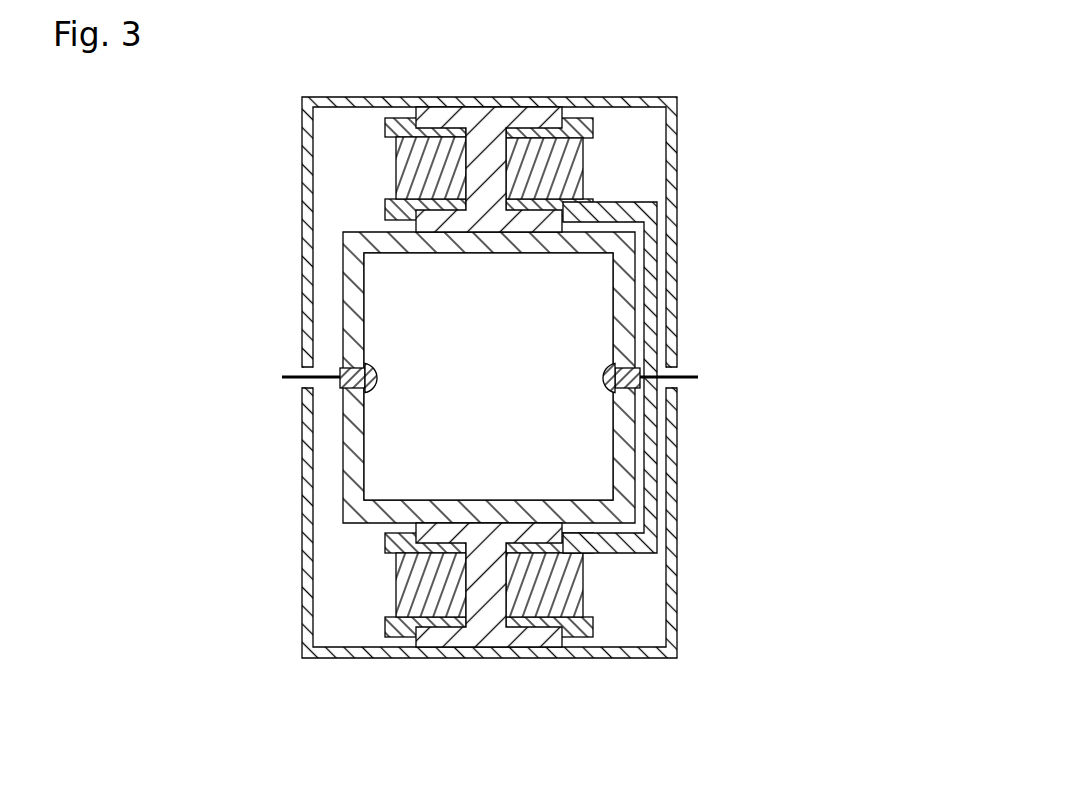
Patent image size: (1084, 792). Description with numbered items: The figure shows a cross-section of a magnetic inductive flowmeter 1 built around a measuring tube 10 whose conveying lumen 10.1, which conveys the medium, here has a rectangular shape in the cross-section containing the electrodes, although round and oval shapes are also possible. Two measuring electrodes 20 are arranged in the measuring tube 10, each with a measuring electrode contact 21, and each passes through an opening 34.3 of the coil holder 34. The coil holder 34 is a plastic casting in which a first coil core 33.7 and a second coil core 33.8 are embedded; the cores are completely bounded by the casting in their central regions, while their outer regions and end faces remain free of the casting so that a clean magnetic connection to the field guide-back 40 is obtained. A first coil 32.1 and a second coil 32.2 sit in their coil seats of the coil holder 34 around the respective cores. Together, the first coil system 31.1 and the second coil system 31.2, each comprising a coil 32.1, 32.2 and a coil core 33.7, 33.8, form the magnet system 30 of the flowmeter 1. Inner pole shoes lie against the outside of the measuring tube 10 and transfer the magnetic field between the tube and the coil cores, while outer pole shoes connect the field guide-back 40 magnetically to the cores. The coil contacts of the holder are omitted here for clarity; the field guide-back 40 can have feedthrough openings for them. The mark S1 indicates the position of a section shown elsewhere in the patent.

The flowmeter 1 is at (782, 668).
The measuring tube 10 is at (625, 512).
The conveying lumen 10.1 is at (385, 460).
The measuring electrode 20 is at (637, 380).
The measuring electrode contact 21 is at (678, 375).
The magnet system 30 is at (446, 386).
The first coil system 31.1 is at (385, 178).
The second coil system 31.2 is at (407, 595).
The first coil 32.1 is at (573, 168).
The second coil 32.2 is at (573, 607).
The first coil core 33.7 is at (543, 118).
The second coil core 33.8 is at (537, 641).
The coil holder 34 is at (645, 212).
The opening 34.3 is at (306, 383).
The field guide-back 40 is at (302, 272).
The section position S1 is at (344, 210).